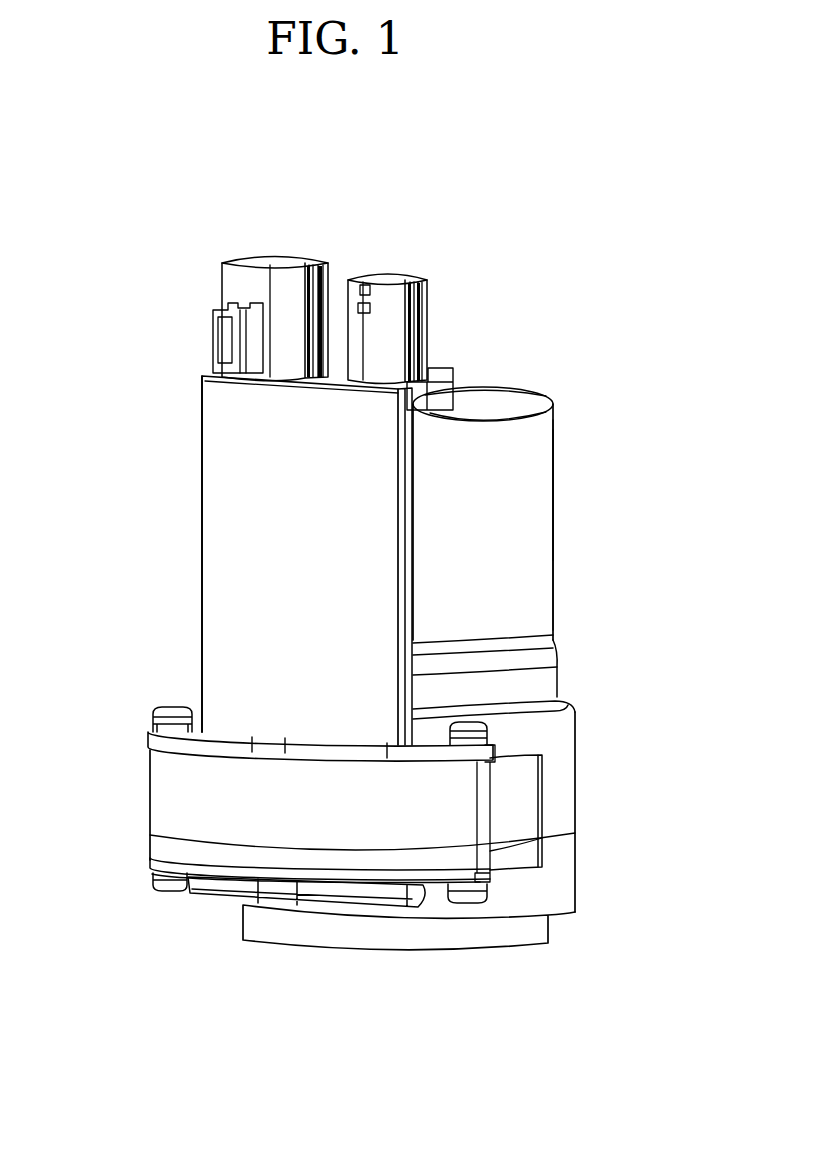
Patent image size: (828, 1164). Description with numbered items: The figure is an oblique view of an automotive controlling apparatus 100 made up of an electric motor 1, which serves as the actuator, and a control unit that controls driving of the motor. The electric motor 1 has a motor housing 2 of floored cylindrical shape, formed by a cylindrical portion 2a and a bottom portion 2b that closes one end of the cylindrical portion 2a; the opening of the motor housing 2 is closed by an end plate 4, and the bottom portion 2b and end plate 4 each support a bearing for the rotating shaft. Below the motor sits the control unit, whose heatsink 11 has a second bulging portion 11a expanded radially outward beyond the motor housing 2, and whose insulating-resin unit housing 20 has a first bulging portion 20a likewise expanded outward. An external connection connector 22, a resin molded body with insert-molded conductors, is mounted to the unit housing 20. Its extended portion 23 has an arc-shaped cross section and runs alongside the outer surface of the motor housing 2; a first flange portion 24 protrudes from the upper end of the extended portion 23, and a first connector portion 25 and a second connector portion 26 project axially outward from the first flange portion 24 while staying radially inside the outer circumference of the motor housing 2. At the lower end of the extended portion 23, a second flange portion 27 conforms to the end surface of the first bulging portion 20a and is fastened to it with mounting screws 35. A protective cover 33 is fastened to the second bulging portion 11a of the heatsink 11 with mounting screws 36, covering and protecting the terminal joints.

The automotive controlling apparatus 100 is at (118, 135).
The electric motor 1 is at (560, 483).
The motor housing 2 is at (556, 568).
The cylindrical portion 2a is at (542, 518).
The bottom portion 2b is at (493, 395).
The end plate 4 is at (545, 643).
The heatsink 11 is at (582, 885).
The second bulging portion 11a is at (508, 858).
The unit housing 20 is at (580, 765).
The first bulging portion 20a is at (513, 808).
The external connection connector 22 is at (197, 447).
The extended portion 23 is at (222, 524).
The first flange portion 24 is at (426, 398).
The first connector portion 25 is at (403, 272).
The second connector portion 26 is at (292, 255).
The second flange portion 27 is at (162, 740).
The protective cover 33 is at (222, 890).
The mounting screws 35 is at (165, 708).
The mounting screws 36 is at (160, 893).